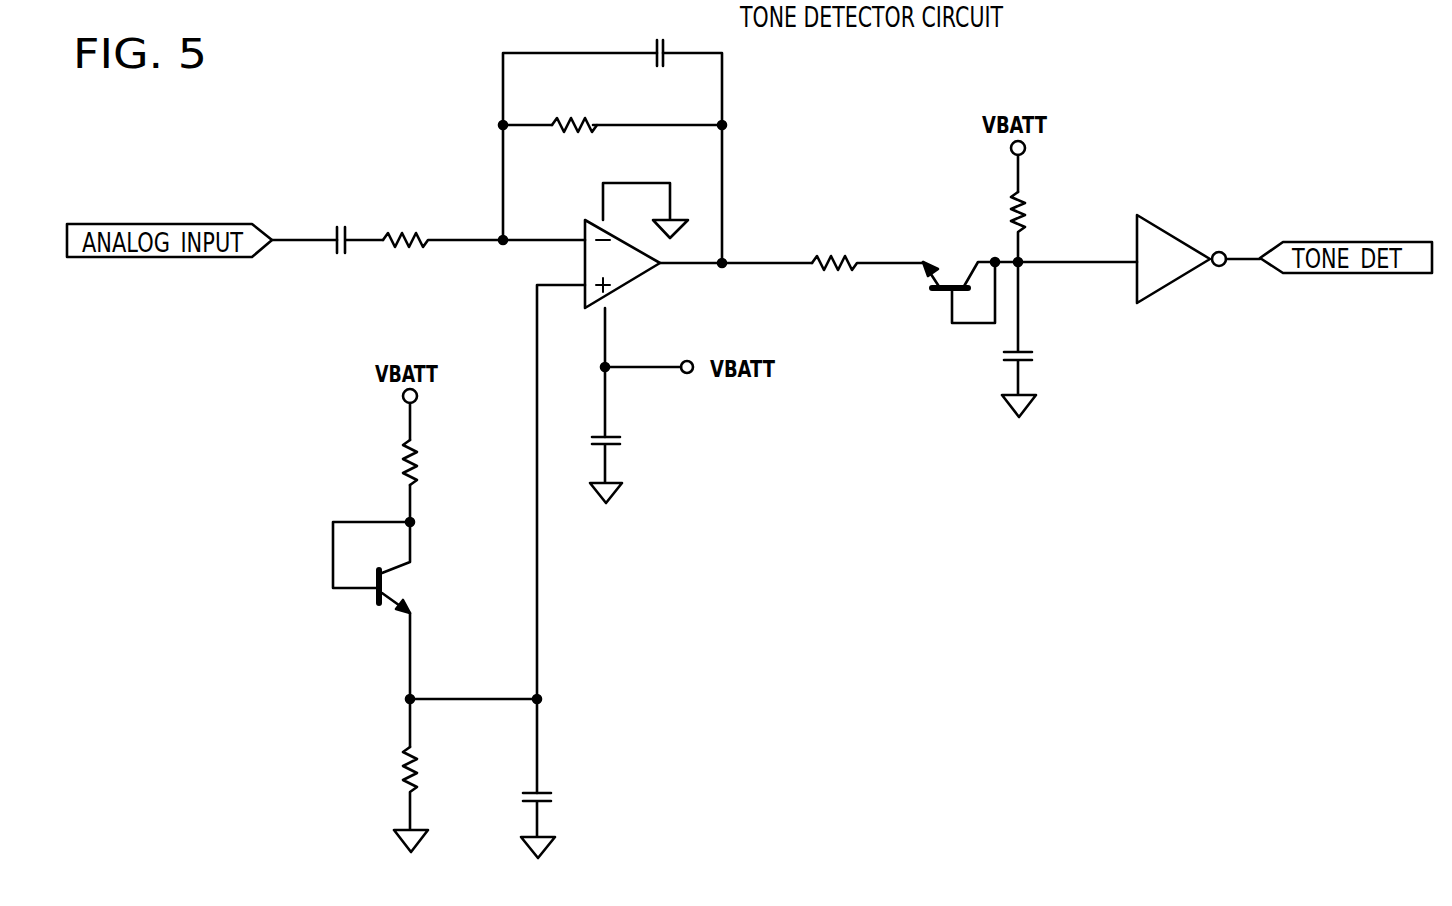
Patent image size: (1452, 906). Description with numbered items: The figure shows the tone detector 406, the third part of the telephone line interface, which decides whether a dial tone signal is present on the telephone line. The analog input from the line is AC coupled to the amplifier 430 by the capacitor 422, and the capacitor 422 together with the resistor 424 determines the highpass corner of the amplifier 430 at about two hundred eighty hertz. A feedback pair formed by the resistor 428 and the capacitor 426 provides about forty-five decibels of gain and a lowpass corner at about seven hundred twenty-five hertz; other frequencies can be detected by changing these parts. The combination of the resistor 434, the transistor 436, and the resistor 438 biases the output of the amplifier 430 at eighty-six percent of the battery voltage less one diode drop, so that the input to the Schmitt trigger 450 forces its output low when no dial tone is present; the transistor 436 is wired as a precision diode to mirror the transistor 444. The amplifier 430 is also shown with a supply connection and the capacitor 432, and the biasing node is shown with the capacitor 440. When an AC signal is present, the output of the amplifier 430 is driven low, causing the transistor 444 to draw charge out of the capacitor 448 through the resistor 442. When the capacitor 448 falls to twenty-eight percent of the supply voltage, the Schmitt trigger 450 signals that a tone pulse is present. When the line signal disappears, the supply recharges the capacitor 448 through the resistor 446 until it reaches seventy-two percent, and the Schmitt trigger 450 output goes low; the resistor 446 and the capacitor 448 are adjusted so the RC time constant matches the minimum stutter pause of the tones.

The tone detector 406 is at (893, 457).
The capacitor 422 is at (336, 231).
The resistor 424 is at (402, 231).
The capacitor 426 is at (650, 46).
The resistor 428 is at (568, 114).
The amplifier 430 is at (582, 222).
The capacitor 432 is at (626, 444).
The resistor 434 is at (396, 450).
The transistor 436 is at (412, 597).
The resistor 438 is at (400, 774).
The capacitor 440 is at (556, 796).
The resistor 442 is at (834, 256).
The transistor 444 is at (954, 256).
The resistor 446 is at (1034, 206).
The capacitor 448 is at (1038, 356).
The Schmitt trigger 450 is at (1180, 236).